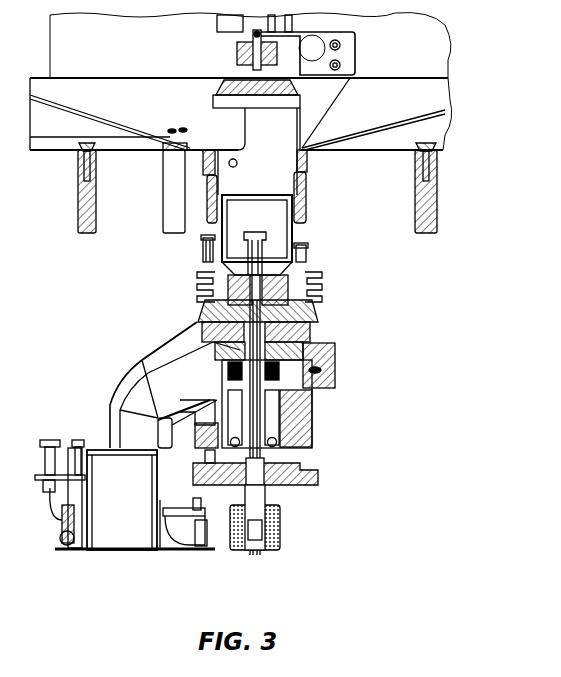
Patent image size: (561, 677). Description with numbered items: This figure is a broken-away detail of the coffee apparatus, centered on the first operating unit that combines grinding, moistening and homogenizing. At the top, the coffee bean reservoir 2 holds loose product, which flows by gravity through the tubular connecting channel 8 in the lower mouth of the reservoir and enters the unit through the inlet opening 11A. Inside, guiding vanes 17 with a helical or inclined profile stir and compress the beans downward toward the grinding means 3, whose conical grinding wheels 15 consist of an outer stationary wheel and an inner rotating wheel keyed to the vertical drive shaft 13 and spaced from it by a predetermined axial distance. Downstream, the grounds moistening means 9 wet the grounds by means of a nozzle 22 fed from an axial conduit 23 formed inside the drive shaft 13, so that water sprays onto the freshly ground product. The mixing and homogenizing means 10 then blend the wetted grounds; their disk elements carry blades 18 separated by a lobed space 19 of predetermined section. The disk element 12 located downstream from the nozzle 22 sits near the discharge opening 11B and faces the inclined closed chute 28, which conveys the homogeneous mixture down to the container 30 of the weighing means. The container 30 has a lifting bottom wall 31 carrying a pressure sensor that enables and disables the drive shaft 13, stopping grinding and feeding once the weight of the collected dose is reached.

The coffee bean reservoir 2 is at (148, 64).
The tubular connecting channel 8 is at (262, 182).
The guiding vanes 17 is at (240, 262).
The inlet opening 11A is at (300, 227).
The grinding wheels 15 is at (303, 262).
The nozzle 22 is at (290, 305).
The grinding means 3 is at (200, 290).
The discharge opening 11B is at (198, 320).
The mixing and homogenizing means 10 is at (322, 320).
The disk element 12 is at (322, 343).
The lobed space 19 is at (314, 402).
The grounds moistening means 9 is at (300, 428).
The axial conduit 23 is at (318, 476).
The vertical drive shaft 13 is at (272, 508).
The blades 18 is at (220, 340).
The closed chute 28 is at (130, 400).
The container 30 is at (136, 514).
The lifting bottom wall 31 is at (118, 550).